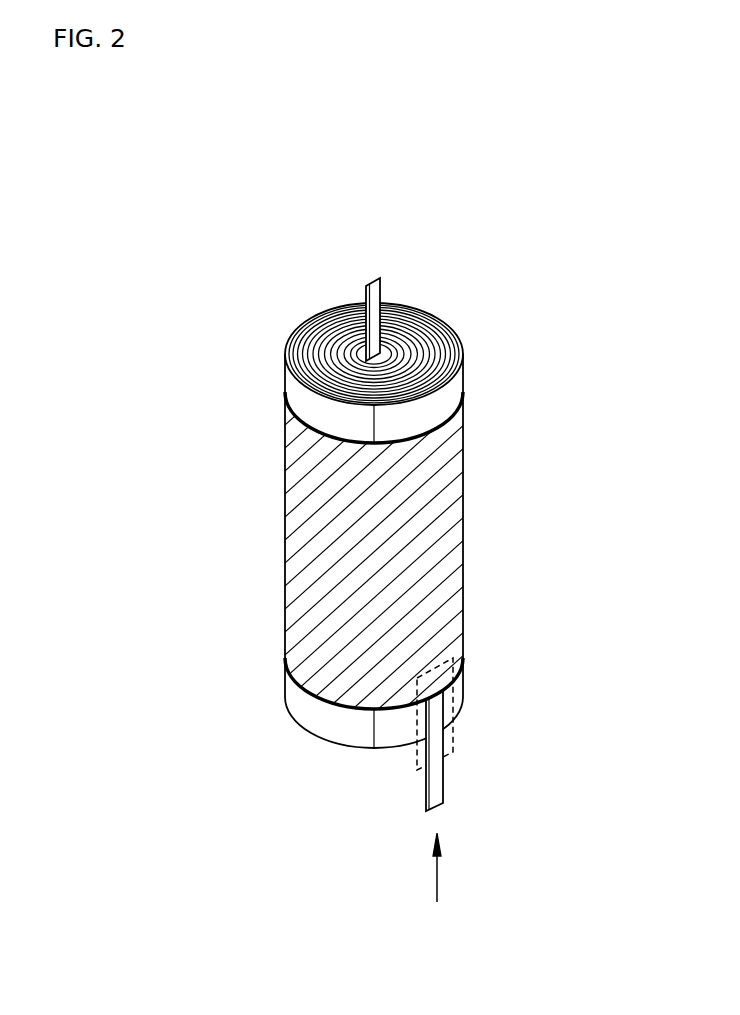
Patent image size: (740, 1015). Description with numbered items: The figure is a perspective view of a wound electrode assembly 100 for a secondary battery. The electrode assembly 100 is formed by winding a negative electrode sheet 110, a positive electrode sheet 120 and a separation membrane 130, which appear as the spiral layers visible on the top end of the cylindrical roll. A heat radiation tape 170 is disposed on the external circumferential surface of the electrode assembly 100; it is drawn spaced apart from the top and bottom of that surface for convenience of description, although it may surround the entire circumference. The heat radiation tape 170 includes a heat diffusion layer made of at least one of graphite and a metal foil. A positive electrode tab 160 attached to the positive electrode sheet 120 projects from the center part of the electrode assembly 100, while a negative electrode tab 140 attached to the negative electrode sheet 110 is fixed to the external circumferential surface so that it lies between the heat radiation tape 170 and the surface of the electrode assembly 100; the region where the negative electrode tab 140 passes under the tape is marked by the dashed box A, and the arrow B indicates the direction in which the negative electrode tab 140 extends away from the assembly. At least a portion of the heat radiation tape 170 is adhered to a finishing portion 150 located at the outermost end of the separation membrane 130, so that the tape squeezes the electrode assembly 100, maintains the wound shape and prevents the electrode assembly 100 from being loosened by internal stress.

The electrode assembly 100 is at (593, 270).
The negative electrode sheet 110 is at (460, 357).
The positive electrode sheet 120 is at (432, 318).
The separation membrane 130 is at (443, 332).
The negative electrode tab 140 is at (443, 787).
The finishing portion 150 is at (373, 729).
The positive electrode tab 160 is at (365, 286).
The heat radiation tape 170 is at (455, 533).
The region A is at (453, 702).
The direction B is at (439, 884).